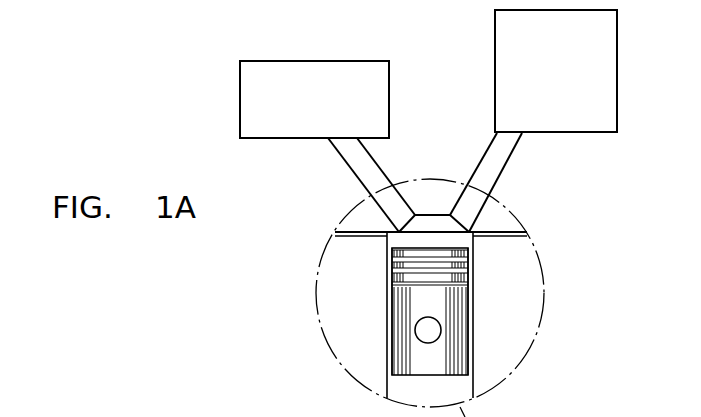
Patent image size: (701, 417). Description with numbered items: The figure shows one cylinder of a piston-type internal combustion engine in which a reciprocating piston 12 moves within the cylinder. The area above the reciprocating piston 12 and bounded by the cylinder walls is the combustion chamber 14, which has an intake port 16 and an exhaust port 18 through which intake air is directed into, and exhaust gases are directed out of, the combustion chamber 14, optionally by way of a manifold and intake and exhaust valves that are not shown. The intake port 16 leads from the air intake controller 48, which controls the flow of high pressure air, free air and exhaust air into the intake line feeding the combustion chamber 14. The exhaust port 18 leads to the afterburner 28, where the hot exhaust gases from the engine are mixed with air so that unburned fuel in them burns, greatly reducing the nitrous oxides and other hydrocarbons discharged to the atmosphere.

The reciprocating piston 12 is at (470, 367).
The combustion chamber 14 is at (457, 238).
The intake port 16 is at (345, 151).
The exhaust port 18 is at (502, 162).
The afterburner 28 is at (542, 82).
The air intake controller 48 is at (325, 113).